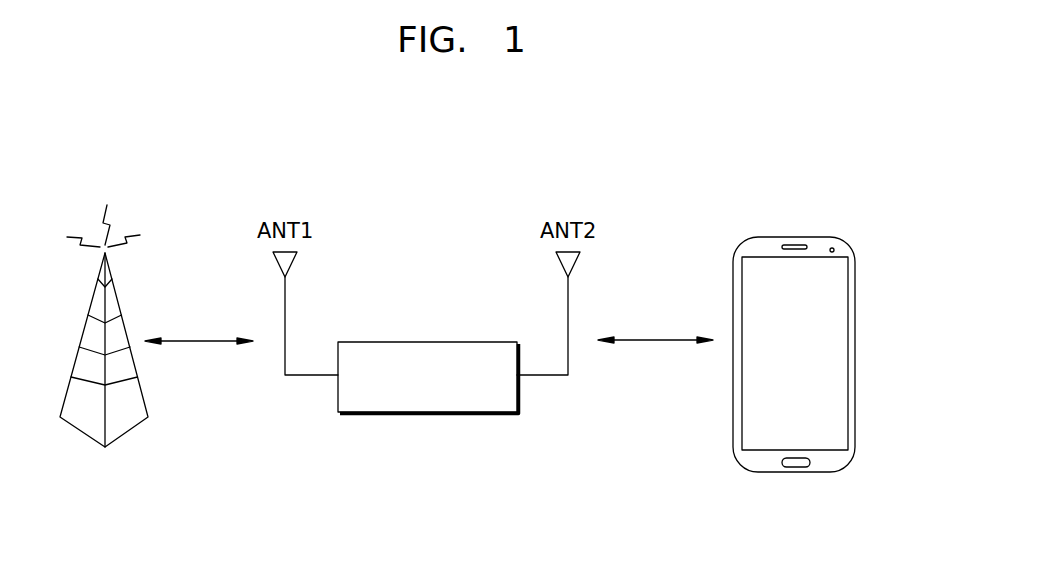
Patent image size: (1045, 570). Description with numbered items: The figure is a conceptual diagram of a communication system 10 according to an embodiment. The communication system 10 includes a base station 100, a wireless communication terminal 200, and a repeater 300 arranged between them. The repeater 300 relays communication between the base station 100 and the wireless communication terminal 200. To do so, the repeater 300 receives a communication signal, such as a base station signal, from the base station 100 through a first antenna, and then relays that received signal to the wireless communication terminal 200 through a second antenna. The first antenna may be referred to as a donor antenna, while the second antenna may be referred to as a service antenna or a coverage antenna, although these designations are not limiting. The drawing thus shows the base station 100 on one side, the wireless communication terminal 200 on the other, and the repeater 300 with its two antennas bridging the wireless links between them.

The communication system 10 is at (729, 157).
The base station 100 is at (120, 300).
The wireless communication terminal 200 is at (813, 237).
The repeater 300 is at (443, 340).